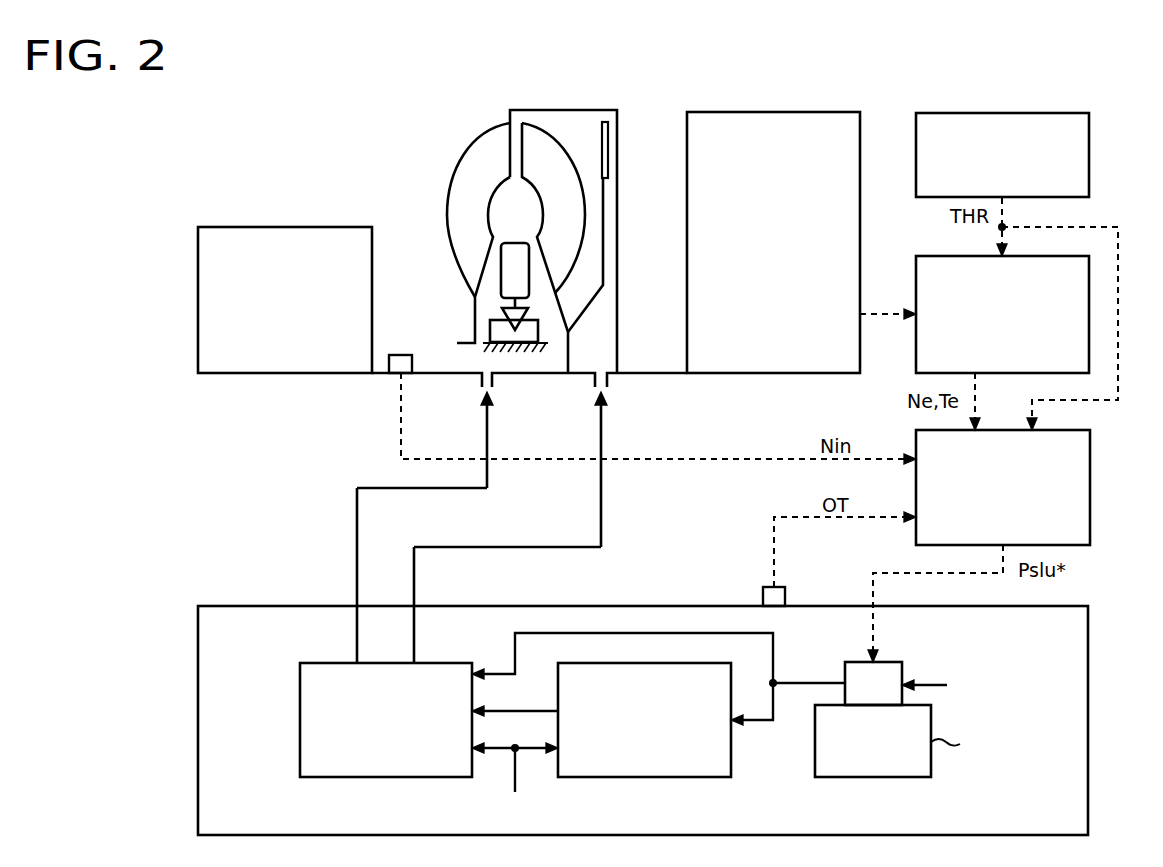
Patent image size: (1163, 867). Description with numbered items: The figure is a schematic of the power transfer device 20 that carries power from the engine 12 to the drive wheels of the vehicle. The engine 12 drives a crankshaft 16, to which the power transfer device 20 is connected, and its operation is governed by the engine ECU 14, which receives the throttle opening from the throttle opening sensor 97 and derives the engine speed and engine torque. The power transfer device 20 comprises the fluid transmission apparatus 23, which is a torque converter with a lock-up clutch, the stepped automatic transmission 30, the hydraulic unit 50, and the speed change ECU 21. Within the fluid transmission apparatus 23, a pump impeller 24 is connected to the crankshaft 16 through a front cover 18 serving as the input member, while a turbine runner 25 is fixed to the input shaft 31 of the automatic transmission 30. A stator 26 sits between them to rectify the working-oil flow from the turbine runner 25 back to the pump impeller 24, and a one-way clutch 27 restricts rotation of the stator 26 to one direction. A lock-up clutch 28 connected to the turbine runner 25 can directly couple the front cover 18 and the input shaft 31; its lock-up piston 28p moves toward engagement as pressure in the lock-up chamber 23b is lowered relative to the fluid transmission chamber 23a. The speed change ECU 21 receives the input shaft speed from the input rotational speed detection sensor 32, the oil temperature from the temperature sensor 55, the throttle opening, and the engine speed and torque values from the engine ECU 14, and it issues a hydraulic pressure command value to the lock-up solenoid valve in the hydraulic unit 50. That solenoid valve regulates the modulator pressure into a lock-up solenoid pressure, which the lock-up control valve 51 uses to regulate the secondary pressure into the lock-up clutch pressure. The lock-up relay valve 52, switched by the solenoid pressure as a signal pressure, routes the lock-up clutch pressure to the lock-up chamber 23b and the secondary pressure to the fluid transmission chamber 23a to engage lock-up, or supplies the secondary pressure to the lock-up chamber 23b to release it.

The engine 12 is at (823, 112).
The engine ECU 14 is at (935, 256).
The crankshaft 16 is at (662, 374).
The front cover 18 is at (617, 195).
The power transfer device 20 is at (323, 116).
The speed change ECU 21 is at (1090, 487).
The fluid transmission apparatus 23 is at (440, 148).
The fluid transmission chamber 23a is at (578, 147).
The lock-up chamber 23b is at (594, 352).
The pump impeller 24 is at (447, 190).
The turbine runner 25 is at (542, 143).
The stator 26 is at (514, 243).
The one-way clutch 27 is at (490, 328).
The lock-up clutch 28 is at (628, 169).
The lock-up piston 28p is at (603, 251).
The automatic transmission 30 is at (235, 226).
The input shaft 31 is at (452, 375).
The input rotational speed detection sensor 32 is at (404, 355).
The hydraulic unit 50 is at (233, 606).
The lock-up control valve 51 is at (708, 778).
The lock-up relay valve 52 is at (300, 717).
The temperature sensor 55 is at (763, 595).
The throttle opening sensor 97 is at (1089, 152).